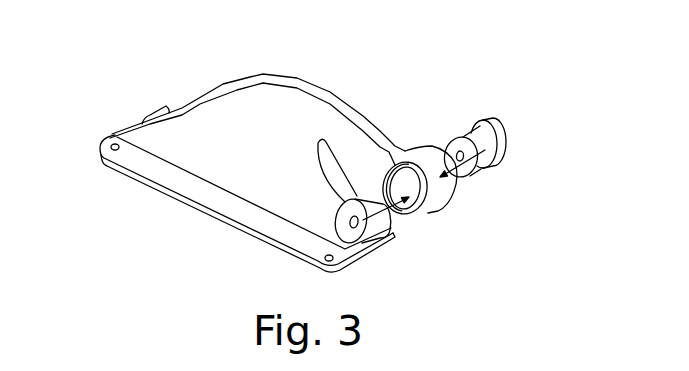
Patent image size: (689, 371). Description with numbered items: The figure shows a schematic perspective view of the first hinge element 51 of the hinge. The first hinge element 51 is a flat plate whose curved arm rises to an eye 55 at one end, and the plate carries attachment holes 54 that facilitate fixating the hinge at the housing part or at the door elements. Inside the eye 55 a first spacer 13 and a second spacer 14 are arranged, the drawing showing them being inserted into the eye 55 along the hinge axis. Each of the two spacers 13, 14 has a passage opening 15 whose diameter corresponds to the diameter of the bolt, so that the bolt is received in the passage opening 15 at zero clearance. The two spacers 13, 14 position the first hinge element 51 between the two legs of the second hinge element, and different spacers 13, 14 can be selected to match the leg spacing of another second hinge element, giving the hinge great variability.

The first spacer 13 is at (489, 121).
The second spacer 14 is at (359, 240).
The passage opening 15 is at (355, 191).
The first hinge element 51 is at (257, 102).
The attachment holes 54 is at (115, 151).
The eye 55 is at (416, 151).